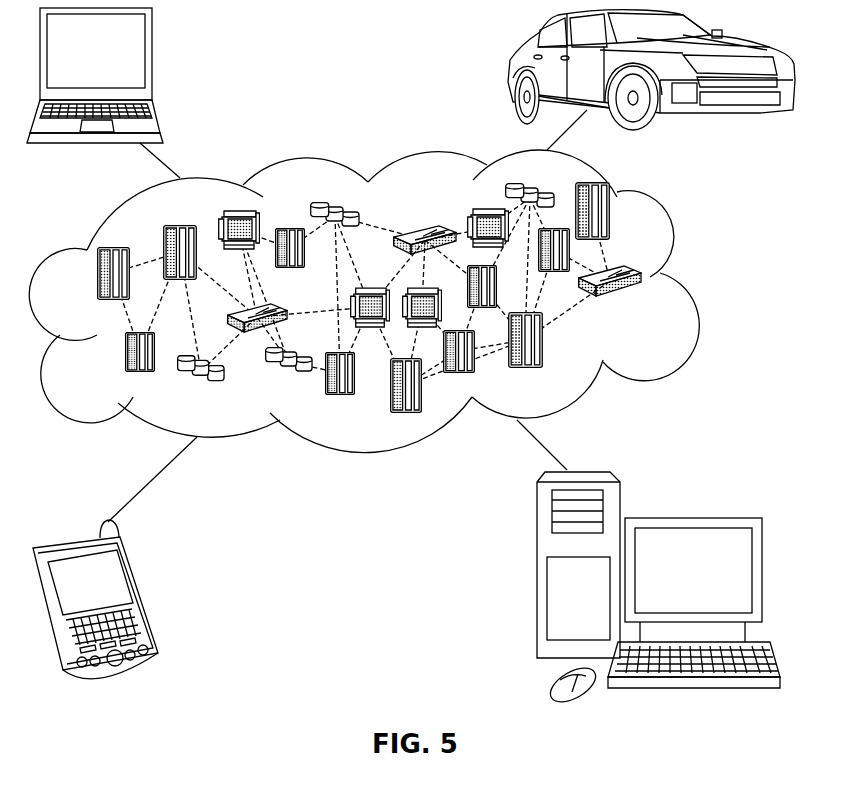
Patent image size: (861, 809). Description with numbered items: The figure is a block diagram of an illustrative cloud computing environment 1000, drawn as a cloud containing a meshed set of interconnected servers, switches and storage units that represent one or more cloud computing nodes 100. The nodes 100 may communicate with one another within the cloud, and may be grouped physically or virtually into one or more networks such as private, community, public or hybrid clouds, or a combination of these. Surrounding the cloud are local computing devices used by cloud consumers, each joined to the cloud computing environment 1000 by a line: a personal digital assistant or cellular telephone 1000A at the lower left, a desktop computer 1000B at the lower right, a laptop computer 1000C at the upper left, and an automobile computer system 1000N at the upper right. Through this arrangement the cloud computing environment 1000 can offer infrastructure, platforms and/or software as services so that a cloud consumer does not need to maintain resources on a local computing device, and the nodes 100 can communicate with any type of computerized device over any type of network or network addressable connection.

The laptop computer 1000C is at (152, 60).
The automobile computer system 1000N is at (508, 70).
The cloud computing environment 1000 is at (693, 283).
The cloud computing nodes 100 is at (643, 305).
The personal digital assistant (PDA) or cellular telephone 1000A is at (145, 595).
The desktop computer 1000B is at (692, 515).